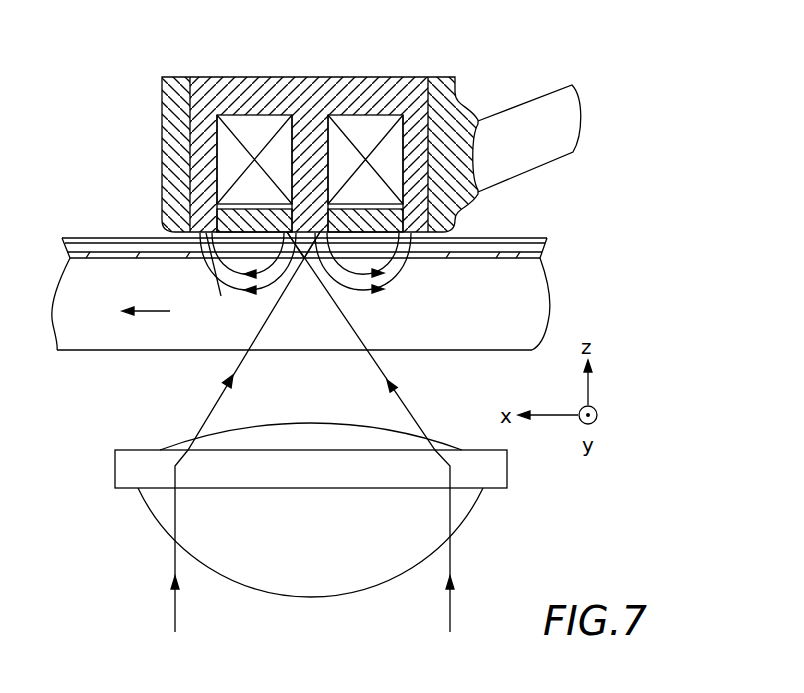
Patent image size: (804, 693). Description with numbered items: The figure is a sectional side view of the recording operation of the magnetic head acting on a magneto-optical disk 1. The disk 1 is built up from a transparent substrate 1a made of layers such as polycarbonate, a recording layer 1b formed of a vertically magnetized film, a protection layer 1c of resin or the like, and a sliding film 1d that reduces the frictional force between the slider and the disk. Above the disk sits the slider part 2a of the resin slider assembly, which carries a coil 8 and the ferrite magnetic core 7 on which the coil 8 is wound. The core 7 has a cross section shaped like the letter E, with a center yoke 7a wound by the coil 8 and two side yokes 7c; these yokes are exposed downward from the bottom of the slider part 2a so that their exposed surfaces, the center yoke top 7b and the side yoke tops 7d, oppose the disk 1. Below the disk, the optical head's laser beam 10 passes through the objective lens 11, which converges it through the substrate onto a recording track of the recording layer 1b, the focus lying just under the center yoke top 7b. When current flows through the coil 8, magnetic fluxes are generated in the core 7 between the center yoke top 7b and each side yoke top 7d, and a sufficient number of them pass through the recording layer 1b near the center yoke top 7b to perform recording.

The magneto-optical disk 1 is at (42, 233).
The transparent substrate 1a is at (533, 287).
The recording layer 1b is at (540, 260).
The protection layer 1c is at (542, 249).
The sliding film 1d is at (520, 242).
The slider part 2a is at (167, 98).
The magnetic core 7 is at (317, 78).
The center yoke 7a is at (293, 170).
The center yoke top 7b is at (310, 262).
The side yoke 7c is at (188, 140).
The side yoke top 7d is at (462, 367).
The coil 8 is at (330, 117).
The laser beam 10 is at (175, 608).
The objective lens 11 is at (508, 477).